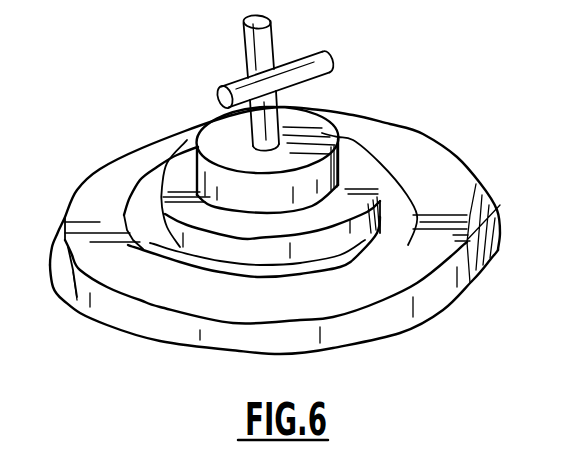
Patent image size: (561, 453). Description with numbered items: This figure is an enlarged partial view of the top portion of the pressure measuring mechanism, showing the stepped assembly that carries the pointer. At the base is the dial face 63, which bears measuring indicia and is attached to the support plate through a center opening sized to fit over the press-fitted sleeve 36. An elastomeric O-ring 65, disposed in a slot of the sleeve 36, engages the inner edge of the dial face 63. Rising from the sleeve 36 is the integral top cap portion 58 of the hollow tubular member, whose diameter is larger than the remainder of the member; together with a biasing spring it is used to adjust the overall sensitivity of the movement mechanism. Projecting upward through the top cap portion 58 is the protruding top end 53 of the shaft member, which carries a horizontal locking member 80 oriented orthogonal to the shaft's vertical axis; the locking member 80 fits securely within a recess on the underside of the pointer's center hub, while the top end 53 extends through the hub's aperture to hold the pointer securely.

The protruding top end 53 is at (243, 52).
The locking member 80 is at (333, 65).
The top cap portion 58 is at (338, 178).
The press-fitted sleeve 36 is at (330, 233).
The elastomeric O-ring 65 is at (148, 213).
The dial face 63 is at (112, 305).